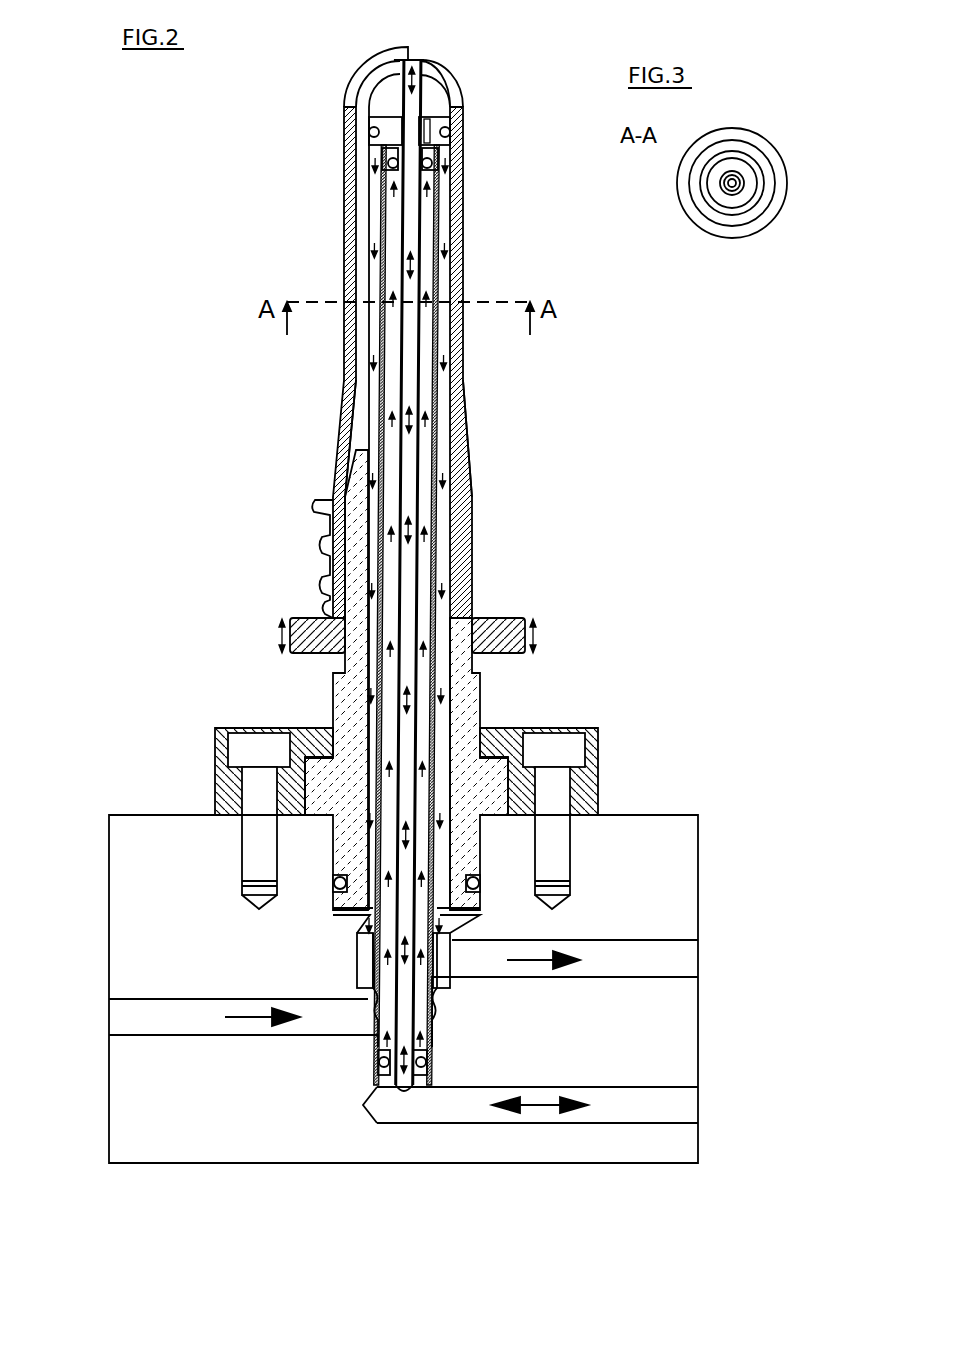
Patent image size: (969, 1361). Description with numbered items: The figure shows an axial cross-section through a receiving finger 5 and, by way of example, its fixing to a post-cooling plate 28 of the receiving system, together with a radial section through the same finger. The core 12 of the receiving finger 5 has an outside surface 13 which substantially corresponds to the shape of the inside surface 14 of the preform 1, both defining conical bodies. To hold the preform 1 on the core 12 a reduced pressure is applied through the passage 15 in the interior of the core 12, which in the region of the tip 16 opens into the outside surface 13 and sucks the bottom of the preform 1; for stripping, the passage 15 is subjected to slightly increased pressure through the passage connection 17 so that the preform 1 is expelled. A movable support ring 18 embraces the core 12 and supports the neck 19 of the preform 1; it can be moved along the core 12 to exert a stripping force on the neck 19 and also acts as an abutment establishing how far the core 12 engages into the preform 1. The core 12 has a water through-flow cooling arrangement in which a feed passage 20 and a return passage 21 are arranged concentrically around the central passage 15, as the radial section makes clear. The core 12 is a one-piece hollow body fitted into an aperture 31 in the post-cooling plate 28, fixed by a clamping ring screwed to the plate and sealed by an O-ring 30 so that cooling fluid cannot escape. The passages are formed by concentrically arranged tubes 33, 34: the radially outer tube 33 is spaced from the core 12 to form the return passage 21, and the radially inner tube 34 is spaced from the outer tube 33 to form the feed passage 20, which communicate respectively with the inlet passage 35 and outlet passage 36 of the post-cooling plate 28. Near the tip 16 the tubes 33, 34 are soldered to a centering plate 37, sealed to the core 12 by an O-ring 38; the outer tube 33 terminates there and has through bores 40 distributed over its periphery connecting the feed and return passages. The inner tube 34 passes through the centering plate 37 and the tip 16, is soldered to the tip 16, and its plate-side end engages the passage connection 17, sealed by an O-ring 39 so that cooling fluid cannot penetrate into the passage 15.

In FIG. 2, the preform 1 is at (351, 186).
In FIG. 2, the receiving finger 5 is at (311, 87).
In FIG. 2, the core of the receiving finger 12 is at (460, 537).
In FIG. 2, the outside surface of the core 13 is at (471, 351).
In FIG. 3, the outside surface of the core 13 is at (682, 204).
In FIG. 2, the inside surface of the preform 14 is at (350, 462).
In FIG. 2, the passage 15 is at (408, 519).
In FIG. 3, the passage 15 is at (728, 188).
In FIG. 2, the tip of the core 16 is at (432, 68).
In FIG. 2, the passage connection 17 is at (617, 1108).
In FIG. 2, the support ring 18 is at (502, 638).
In FIG. 2, the neck of the preform 19 is at (340, 610).
In FIG. 2, the feed passage 20 is at (395, 283).
In FIG. 3, the feed passage 20 is at (745, 192).
In FIG. 2, the return passage 21 is at (378, 410).
In FIG. 3, the return passage 21 is at (758, 160).
In FIG. 2, the post-cooling plate 28 is at (675, 916).
In FIG. 2, the O-ring 30 is at (473, 888).
In FIG. 2, the aperture 31 is at (318, 908).
In FIG. 2, the radially outer tube 33 is at (380, 653).
In FIG. 2, the radially inner tube 34 is at (400, 710).
In FIG. 2, the inlet passage 35 is at (155, 1022).
In FIG. 2, the outlet passage 36 is at (667, 966).
In FIG. 2, the centering plate 37 is at (428, 132).
In FIG. 2, the O-ring 38 is at (450, 132).
In FIG. 2, the O-ring 39 is at (427, 1065).
In FIG. 2, the through bores 40 is at (393, 163).